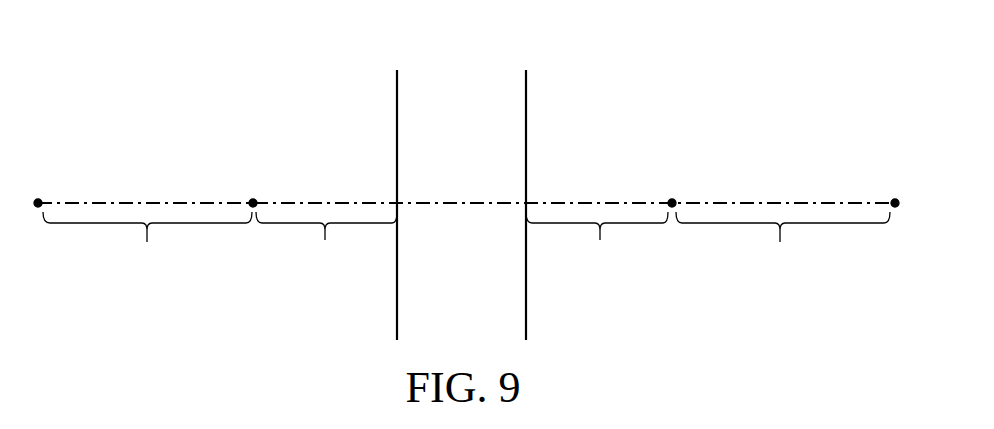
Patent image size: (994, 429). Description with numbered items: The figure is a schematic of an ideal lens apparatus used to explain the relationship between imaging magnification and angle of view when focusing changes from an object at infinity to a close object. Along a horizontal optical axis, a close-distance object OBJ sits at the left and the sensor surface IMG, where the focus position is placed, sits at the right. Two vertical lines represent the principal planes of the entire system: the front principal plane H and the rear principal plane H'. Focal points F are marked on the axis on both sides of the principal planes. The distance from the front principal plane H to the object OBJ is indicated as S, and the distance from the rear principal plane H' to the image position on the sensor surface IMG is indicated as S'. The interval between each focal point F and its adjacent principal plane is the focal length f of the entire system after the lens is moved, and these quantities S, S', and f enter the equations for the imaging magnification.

The object OBJ is at (42, 187).
The sensor surface IMG is at (898, 187).
The focal point F is at (462, 187).
The object-side principal plane H is at (390, 183).
The image-side principal plane H' is at (524, 183).
The object distance S is at (147, 246).
The image distance S' is at (783, 246).
The focal length f is at (462, 246).